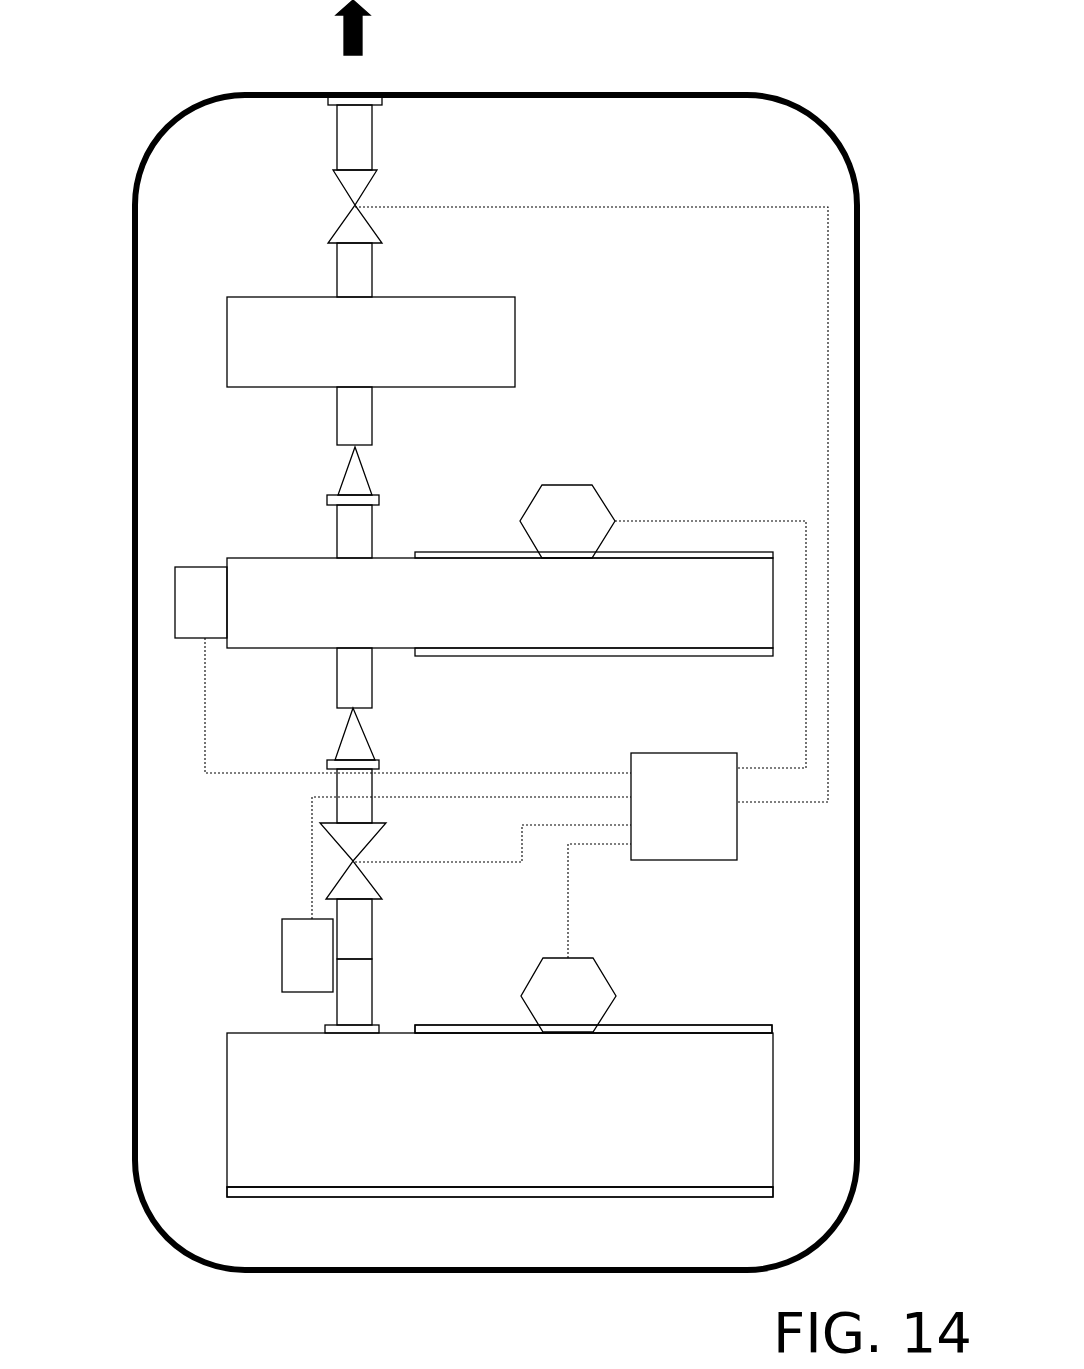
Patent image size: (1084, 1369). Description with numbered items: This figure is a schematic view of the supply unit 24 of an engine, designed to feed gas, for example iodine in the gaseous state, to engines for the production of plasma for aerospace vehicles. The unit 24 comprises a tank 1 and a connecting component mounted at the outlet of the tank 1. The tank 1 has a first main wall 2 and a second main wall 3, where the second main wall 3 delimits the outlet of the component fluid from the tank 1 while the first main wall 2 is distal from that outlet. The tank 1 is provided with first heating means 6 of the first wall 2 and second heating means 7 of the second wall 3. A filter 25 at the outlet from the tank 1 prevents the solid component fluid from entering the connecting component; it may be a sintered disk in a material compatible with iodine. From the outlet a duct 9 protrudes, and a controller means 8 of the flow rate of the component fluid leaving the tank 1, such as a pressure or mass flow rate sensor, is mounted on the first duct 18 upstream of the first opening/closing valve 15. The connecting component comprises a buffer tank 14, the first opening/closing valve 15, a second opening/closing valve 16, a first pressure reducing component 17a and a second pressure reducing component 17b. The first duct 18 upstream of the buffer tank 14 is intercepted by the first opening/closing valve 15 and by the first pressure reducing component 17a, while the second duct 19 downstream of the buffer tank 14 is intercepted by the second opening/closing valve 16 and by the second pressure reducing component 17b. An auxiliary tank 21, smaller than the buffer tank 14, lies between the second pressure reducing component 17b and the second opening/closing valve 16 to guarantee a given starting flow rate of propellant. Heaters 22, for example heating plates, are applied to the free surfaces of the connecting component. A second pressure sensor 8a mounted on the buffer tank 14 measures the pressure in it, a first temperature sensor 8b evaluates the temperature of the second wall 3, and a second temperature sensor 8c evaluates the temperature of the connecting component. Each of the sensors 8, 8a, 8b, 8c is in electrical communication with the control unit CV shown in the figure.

The tank 1 is at (773, 1120).
The first main wall 2 is at (580, 1187).
The second main wall 3 is at (695, 1032).
The first heating means 6 is at (695, 1187).
The second heating means 7 is at (748, 1030).
The controller means 8 is at (282, 952).
The second pressure sensor 8a is at (175, 590).
The first temperature sensor 8b is at (527, 1012).
The second temperature sensor 8c is at (603, 500).
The duct 9 is at (333, 1005).
The buffer tank 14 is at (773, 587).
The first opening/closing valve 15 is at (330, 838).
The second opening/closing valve 16 is at (375, 190).
The first pressure reducing component 17a is at (345, 725).
The second pressure reducing component 17b is at (340, 490).
The first duct 18 is at (333, 910).
The second duct 19 is at (337, 425).
The auxiliary tank 21 is at (227, 320).
The heaters 22 is at (753, 553).
The supply unit 24 is at (857, 375).
The filter 25 is at (325, 1023).
The control unit CV is at (737, 847).